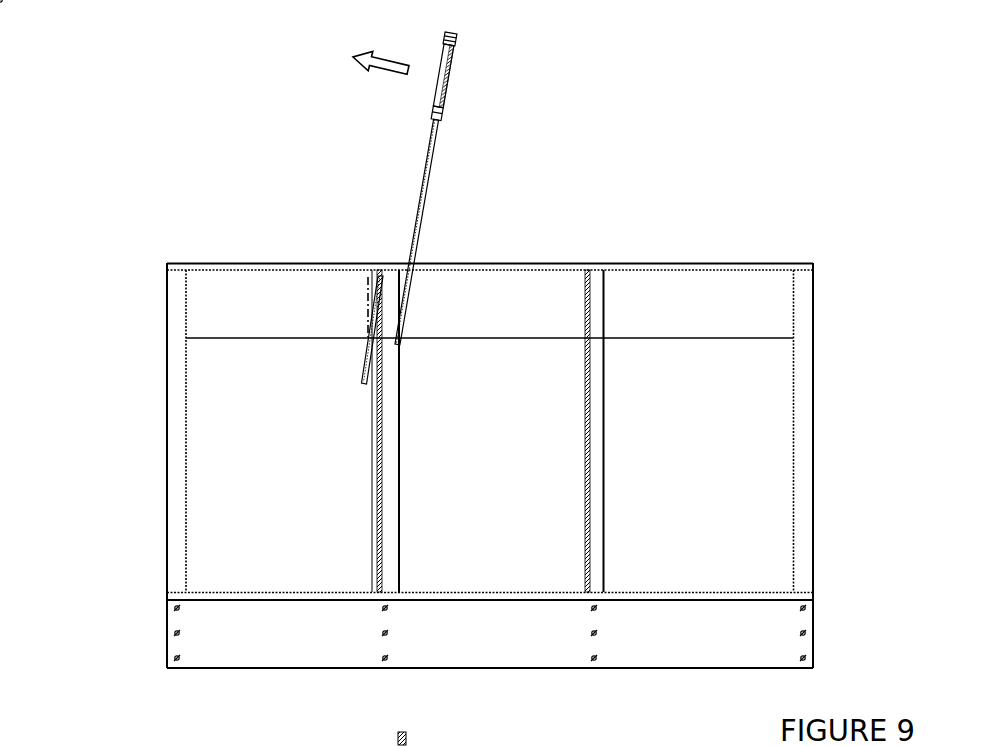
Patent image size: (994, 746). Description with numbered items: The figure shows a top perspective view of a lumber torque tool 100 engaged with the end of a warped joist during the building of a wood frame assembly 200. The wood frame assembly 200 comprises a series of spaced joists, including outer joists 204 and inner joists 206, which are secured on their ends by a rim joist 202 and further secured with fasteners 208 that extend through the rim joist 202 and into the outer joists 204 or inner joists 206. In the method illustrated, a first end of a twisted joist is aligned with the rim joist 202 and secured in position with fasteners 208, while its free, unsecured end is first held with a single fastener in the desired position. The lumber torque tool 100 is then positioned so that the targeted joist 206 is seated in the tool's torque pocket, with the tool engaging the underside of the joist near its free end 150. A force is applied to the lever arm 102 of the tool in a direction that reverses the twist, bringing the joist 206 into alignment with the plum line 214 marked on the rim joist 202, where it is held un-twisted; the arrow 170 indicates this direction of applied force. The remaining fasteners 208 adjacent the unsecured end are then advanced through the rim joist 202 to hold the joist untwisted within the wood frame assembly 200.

The lumber torque tool 100 is at (496, 196).
The lever arm 102 is at (447, 139).
The handle / drive end of tool 170 is at (471, 69).
The joist 150 is at (353, 385).
The wood frame assembly 200 is at (444, 361).
The rim joist 202 is at (563, 257).
The outer joists 204 is at (156, 430).
The inner joists 206 is at (614, 387).
The fasteners 208 is at (170, 254).
The plum line 214 is at (356, 301).